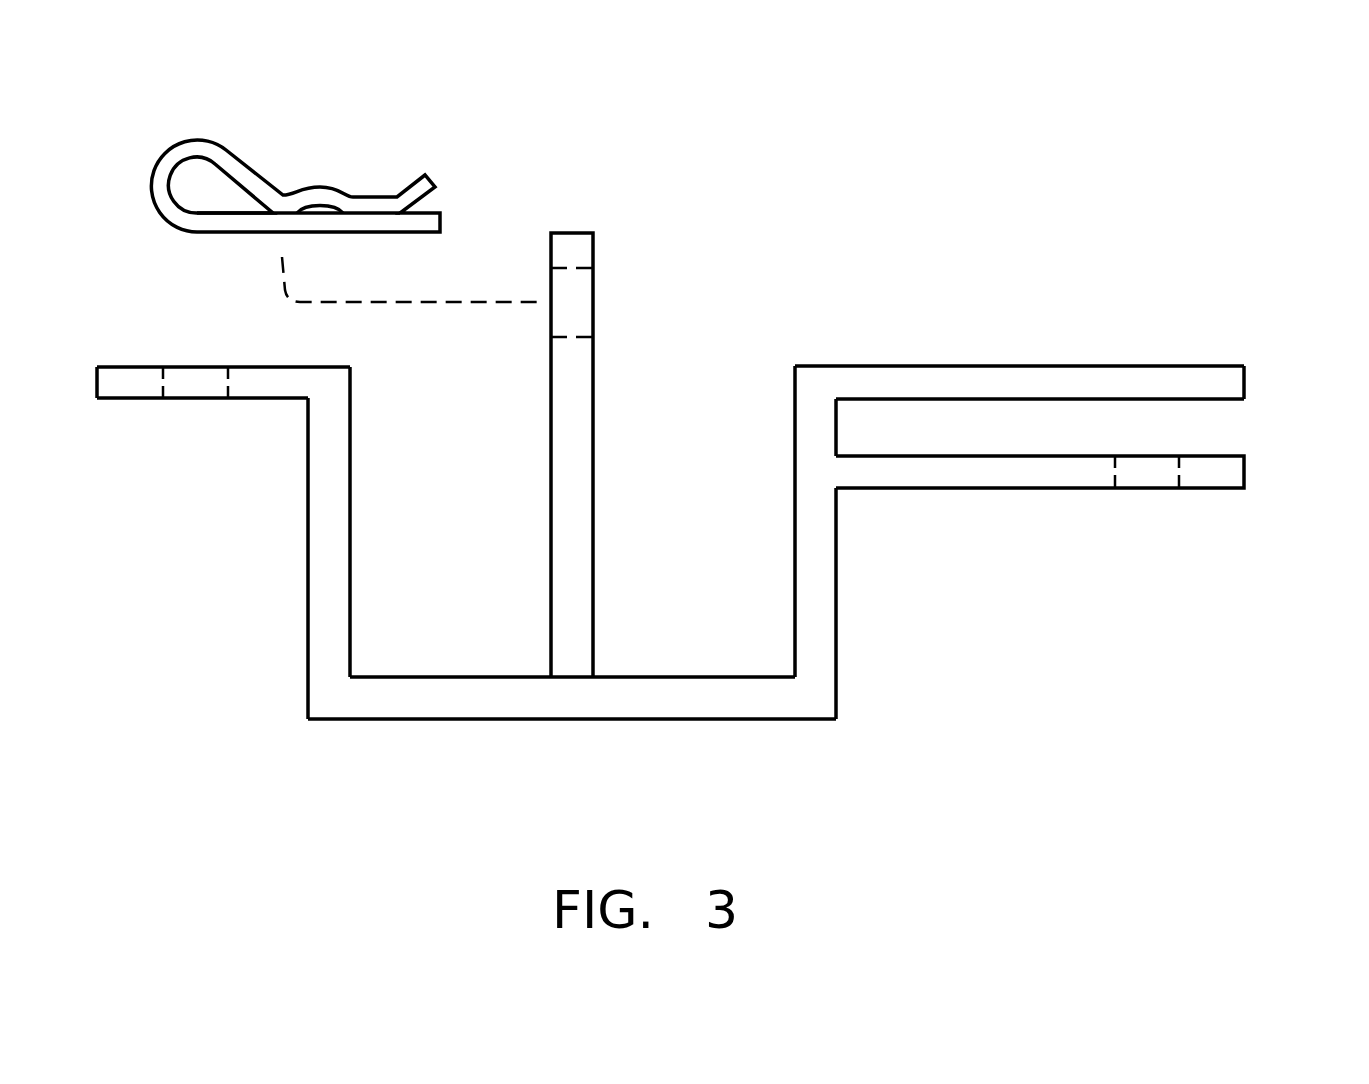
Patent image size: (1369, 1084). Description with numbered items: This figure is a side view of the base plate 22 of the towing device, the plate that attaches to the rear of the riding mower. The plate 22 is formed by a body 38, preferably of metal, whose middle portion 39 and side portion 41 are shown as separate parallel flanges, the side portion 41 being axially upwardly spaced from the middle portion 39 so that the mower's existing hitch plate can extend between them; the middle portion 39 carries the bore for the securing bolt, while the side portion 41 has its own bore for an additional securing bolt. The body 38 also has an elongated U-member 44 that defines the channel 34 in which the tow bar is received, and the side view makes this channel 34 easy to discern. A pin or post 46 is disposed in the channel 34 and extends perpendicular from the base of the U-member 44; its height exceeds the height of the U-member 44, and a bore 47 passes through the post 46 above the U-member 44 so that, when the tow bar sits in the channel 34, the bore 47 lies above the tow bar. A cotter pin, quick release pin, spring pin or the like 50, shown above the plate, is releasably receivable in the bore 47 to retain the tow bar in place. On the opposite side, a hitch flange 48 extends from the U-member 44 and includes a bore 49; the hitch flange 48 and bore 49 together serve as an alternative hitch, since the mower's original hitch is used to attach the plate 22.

The base plate 22 is at (698, 454).
The channel 34 is at (511, 542).
The body 38 is at (1272, 373).
The middle portion 39 is at (924, 469).
The side portion 41 is at (1077, 307).
The U-member 44 is at (330, 528).
The post 46 is at (640, 455).
The bore 47 is at (563, 336).
The hitch flange 48 is at (194, 342).
The bore 49 is at (167, 382).
The cotter pin 50 is at (327, 185).